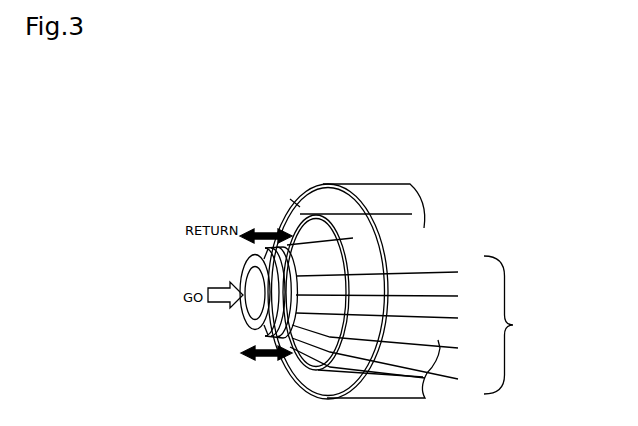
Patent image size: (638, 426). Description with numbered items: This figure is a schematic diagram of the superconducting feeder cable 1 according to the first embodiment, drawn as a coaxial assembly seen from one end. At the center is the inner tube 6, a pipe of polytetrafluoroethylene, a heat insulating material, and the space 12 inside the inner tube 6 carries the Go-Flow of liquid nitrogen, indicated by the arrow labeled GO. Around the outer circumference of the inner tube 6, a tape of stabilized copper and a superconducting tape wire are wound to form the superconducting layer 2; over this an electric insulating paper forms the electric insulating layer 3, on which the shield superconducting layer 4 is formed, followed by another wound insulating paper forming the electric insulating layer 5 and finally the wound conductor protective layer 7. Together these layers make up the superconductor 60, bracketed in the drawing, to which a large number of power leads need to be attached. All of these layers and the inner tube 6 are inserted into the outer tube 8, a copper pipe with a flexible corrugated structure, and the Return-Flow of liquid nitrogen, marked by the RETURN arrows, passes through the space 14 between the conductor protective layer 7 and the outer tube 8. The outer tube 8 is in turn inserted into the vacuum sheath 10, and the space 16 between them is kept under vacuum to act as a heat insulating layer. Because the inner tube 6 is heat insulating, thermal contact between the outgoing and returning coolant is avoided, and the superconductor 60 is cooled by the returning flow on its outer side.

The superconducting feeder cable 1 is at (425, 155).
The superconducting layer 2 is at (384, 319).
The electric insulating layer 3 is at (382, 364).
The shield superconducting layer 4 is at (384, 297).
The electric insulating layer 5 is at (382, 343).
The inner tube 6 is at (242, 263).
The conductor protective layer 7 is at (384, 271).
The outer tube 8 is at (353, 238).
The vacuum sheath 10 is at (366, 198).
The space 12 is at (250, 308).
The space 14 is at (313, 237).
The space 16 is at (307, 208).
The superconductor 60 is at (513, 325).